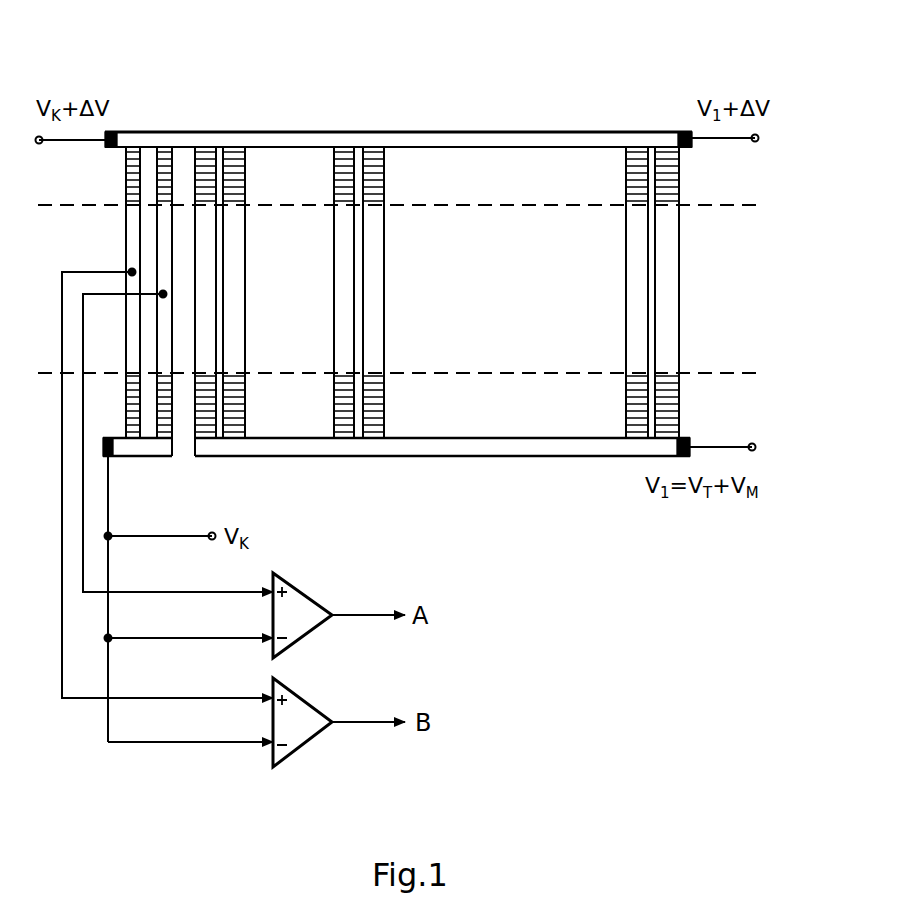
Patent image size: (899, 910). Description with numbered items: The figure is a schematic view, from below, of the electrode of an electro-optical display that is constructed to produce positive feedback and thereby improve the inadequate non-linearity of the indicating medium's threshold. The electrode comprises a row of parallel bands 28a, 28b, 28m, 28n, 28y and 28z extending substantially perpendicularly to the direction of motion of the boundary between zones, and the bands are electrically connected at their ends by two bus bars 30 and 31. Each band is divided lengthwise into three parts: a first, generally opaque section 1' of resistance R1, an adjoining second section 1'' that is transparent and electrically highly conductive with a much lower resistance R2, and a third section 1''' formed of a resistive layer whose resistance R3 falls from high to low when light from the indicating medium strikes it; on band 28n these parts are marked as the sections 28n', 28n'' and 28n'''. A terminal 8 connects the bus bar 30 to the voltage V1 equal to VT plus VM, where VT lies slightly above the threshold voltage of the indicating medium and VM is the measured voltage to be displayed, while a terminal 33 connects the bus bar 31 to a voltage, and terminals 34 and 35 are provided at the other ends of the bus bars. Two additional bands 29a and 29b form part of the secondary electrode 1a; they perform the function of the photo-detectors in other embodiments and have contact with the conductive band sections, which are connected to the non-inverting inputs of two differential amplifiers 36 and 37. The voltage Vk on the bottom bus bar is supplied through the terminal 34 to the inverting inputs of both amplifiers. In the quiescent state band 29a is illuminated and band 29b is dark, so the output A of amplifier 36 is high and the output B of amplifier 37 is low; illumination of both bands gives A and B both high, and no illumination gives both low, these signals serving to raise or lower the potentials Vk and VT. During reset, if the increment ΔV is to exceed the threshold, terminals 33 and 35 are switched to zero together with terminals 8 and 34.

The secondary electrode 1a is at (146, 233).
The first section 1' is at (397, 398).
The second section 1'' is at (562, 288).
The third section 1''' is at (397, 188).
The terminal 8 is at (688, 440).
The band 28a is at (208, 160).
The band 28b is at (238, 160).
The band 28m is at (345, 160).
The band 28n is at (422, 242).
The first section of band 28n' is at (419, 404).
The second section of band 28n'' is at (425, 288).
The third section of band 28n''' is at (422, 176).
The band 28y is at (635, 160).
The band 28z is at (667, 160).
The band 29a is at (165, 160).
The band 29b is at (135, 160).
The bus bar 30 is at (488, 448).
The bus bar 31 is at (497, 138).
The terminal 33 is at (690, 147).
The terminal 34 is at (113, 457).
The terminal 35 is at (108, 146).
The differential amplifier 36 is at (302, 603).
The differential amplifier 37 is at (302, 740).